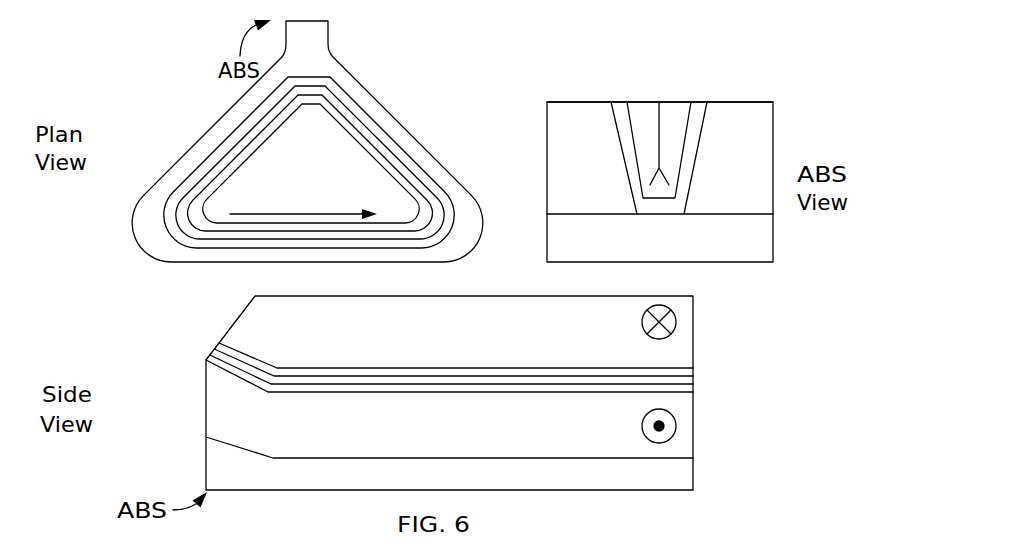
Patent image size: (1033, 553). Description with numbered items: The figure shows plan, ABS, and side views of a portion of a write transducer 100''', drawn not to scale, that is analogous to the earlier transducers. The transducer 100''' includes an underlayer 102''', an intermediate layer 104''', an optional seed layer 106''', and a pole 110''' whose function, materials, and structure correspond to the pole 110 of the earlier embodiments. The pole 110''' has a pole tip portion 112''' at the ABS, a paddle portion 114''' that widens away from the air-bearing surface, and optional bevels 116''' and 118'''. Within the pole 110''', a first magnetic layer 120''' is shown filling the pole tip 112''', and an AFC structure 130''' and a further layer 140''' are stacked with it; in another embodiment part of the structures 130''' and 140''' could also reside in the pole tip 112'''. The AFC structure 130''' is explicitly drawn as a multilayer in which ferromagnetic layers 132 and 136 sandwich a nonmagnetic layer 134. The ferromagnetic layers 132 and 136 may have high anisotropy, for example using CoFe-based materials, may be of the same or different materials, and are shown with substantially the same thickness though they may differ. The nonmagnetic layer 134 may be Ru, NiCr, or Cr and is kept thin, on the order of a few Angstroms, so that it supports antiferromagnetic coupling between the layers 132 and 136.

The write transducer 100''' is at (110, 19).
The underlayer 102''' is at (569, 348).
The intermediate layer 104''' is at (690, 110).
The optional seed layer 106''' is at (629, 135).
The pole 110 is at (141, 72).
The pole 110''' is at (779, 347).
The pole tip portion 112''' is at (556, 134).
The paddle portion 114''' is at (467, 120).
The optional bevel 116''' is at (180, 473).
The optional bevel 118''' is at (125, 330).
The first magnetic layer 120''' is at (450, 239).
The AFC structure 130''' is at (400, 233).
The ferromagnetic layer 132 is at (170, 240).
The nonmagnetic layer 134 is at (405, 162).
The ferromagnetic layer 136 is at (247, 137).
The layer 140''' is at (416, 273).